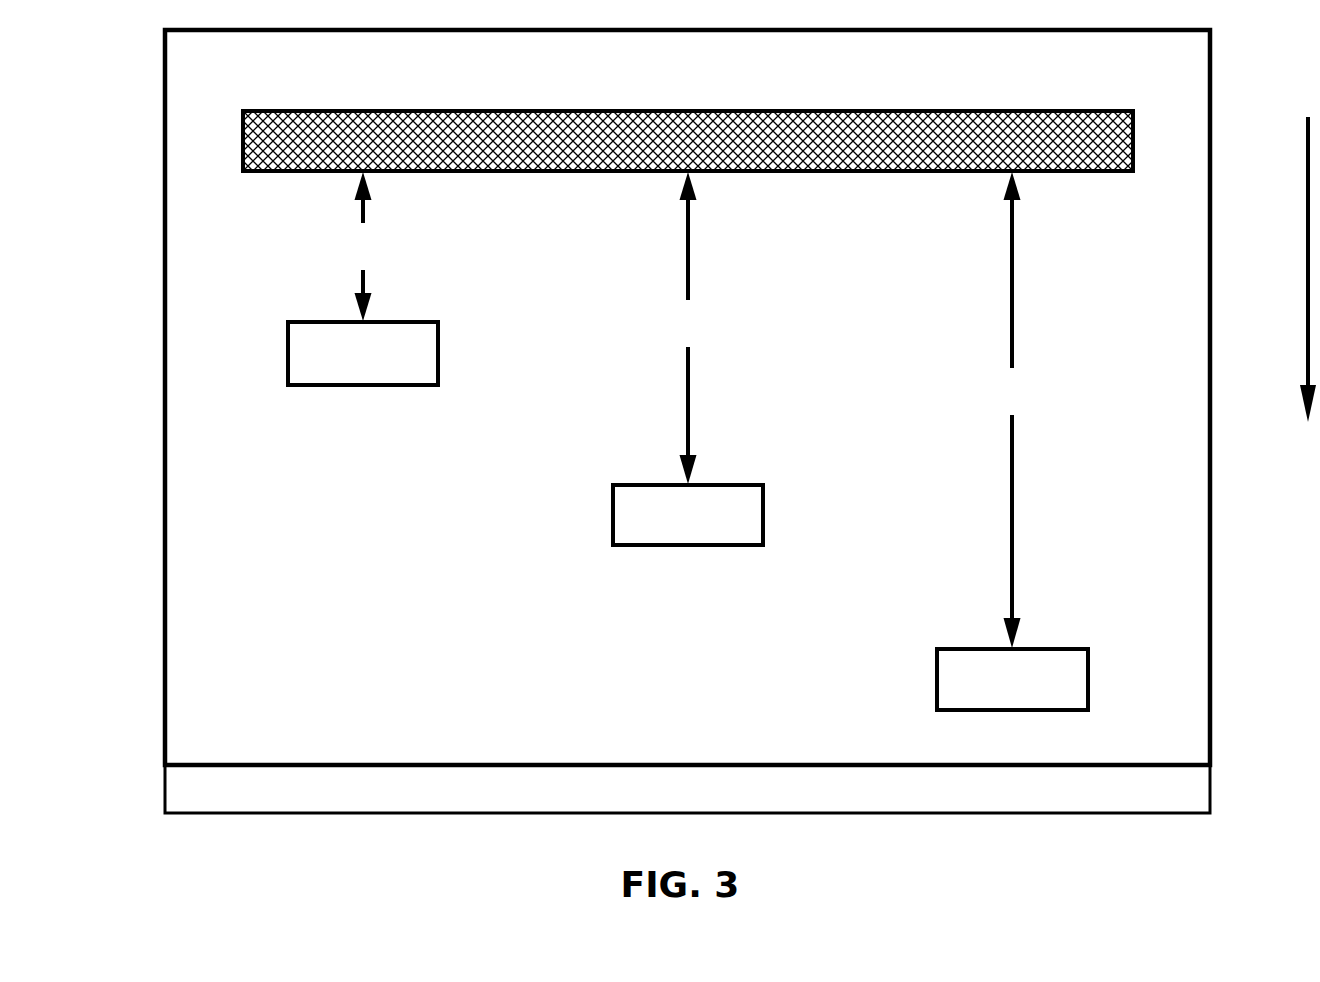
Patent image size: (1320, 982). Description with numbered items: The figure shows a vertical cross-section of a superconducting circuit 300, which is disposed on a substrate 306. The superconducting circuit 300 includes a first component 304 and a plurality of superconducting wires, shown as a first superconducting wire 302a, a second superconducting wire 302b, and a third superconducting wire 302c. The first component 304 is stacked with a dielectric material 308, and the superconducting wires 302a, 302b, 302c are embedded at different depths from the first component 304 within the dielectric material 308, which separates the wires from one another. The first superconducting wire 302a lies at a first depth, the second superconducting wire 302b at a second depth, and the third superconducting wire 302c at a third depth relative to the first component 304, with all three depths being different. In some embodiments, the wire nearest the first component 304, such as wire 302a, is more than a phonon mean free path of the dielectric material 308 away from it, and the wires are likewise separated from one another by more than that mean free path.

The superconducting circuit 300 is at (76, 104).
The first superconducting wire 302a is at (336, 367).
The second superconducting wire 302b is at (661, 530).
The third superconducting wire 302c is at (985, 695).
The first component 304 is at (667, 152).
The substrate 306 is at (668, 802).
The dielectric material 308 is at (174, 62).